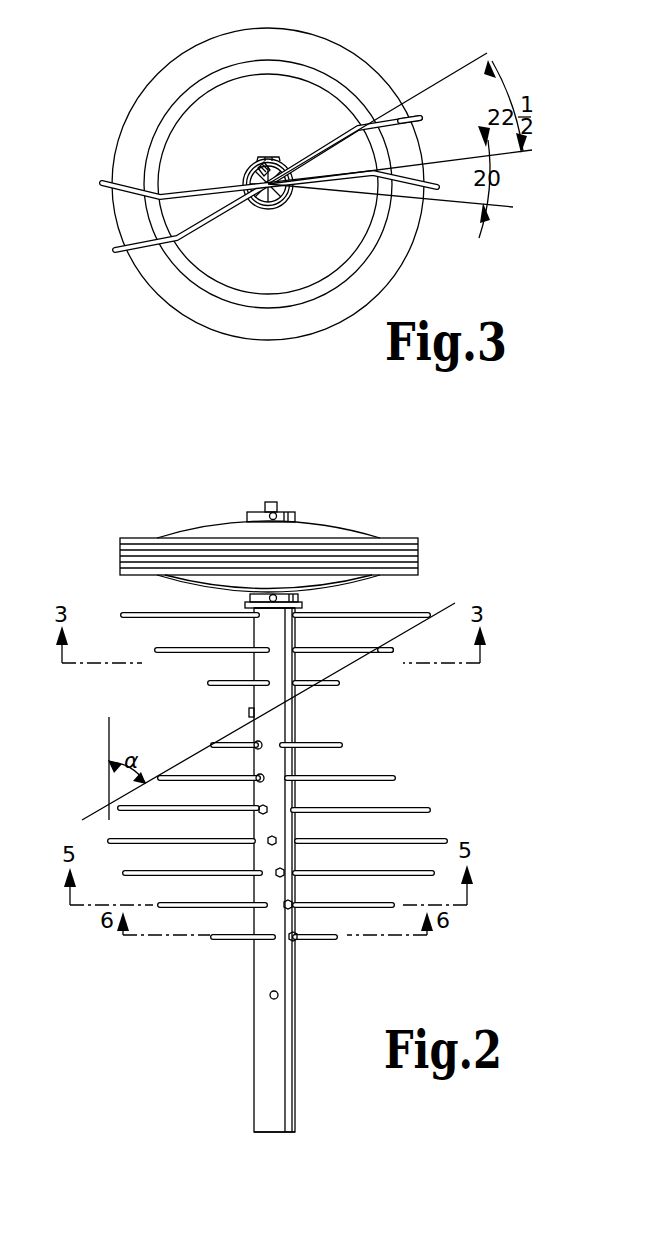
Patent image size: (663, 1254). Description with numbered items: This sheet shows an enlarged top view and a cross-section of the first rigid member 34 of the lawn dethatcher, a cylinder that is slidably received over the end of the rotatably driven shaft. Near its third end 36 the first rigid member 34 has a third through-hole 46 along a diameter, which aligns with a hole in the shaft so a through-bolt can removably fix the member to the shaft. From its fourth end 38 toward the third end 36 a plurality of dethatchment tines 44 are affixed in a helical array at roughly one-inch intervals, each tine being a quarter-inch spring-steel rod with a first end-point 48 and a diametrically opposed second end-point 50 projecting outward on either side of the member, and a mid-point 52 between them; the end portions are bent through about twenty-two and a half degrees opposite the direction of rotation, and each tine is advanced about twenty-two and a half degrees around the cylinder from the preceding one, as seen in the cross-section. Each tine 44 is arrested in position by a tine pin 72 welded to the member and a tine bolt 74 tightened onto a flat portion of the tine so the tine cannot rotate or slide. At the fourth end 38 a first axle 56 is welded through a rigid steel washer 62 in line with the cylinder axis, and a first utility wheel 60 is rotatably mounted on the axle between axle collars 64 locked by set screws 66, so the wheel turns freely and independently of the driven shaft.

In FIG. 3, the first rigid member 34 is at (258, 209).
In FIG. 2, the first rigid member 34 is at (254, 1060).
In FIG. 2, the third end 36 is at (283, 1134).
In FIG. 2, the fourth end 38 is at (272, 618).
In FIG. 3, the dethatchment tines 44 is at (340, 144).
In FIG. 2, the dethatchment tines 44 is at (320, 651).
In FIG. 2, the third through-hole 46 is at (279, 995).
In FIG. 3, the first end-point 48 is at (423, 118).
In FIG. 2, the first end-point 48 is at (392, 650).
In FIG. 3, the second end-point 50 is at (113, 251).
In FIG. 2, the second end-point 50 is at (157, 650).
In FIG. 3, the mid-point 52 is at (272, 164).
In FIG. 2, the first axle 56 is at (268, 502).
In FIG. 3, the first utility wheel 60 is at (408, 254).
In FIG. 2, the first utility wheel 60 is at (434, 554).
In FIG. 3, the washer 62 is at (293, 198).
In FIG. 2, the washer 62 is at (245, 605).
In FIG. 2, the axle collars 64 is at (297, 517).
In FIG. 2, the set screws 66 is at (279, 512).
In FIG. 3, the tine pin 72 is at (275, 206).
In FIG. 3, the tine bolt 74 is at (258, 159).
In FIG. 2, the tine bolt 74 is at (296, 931).